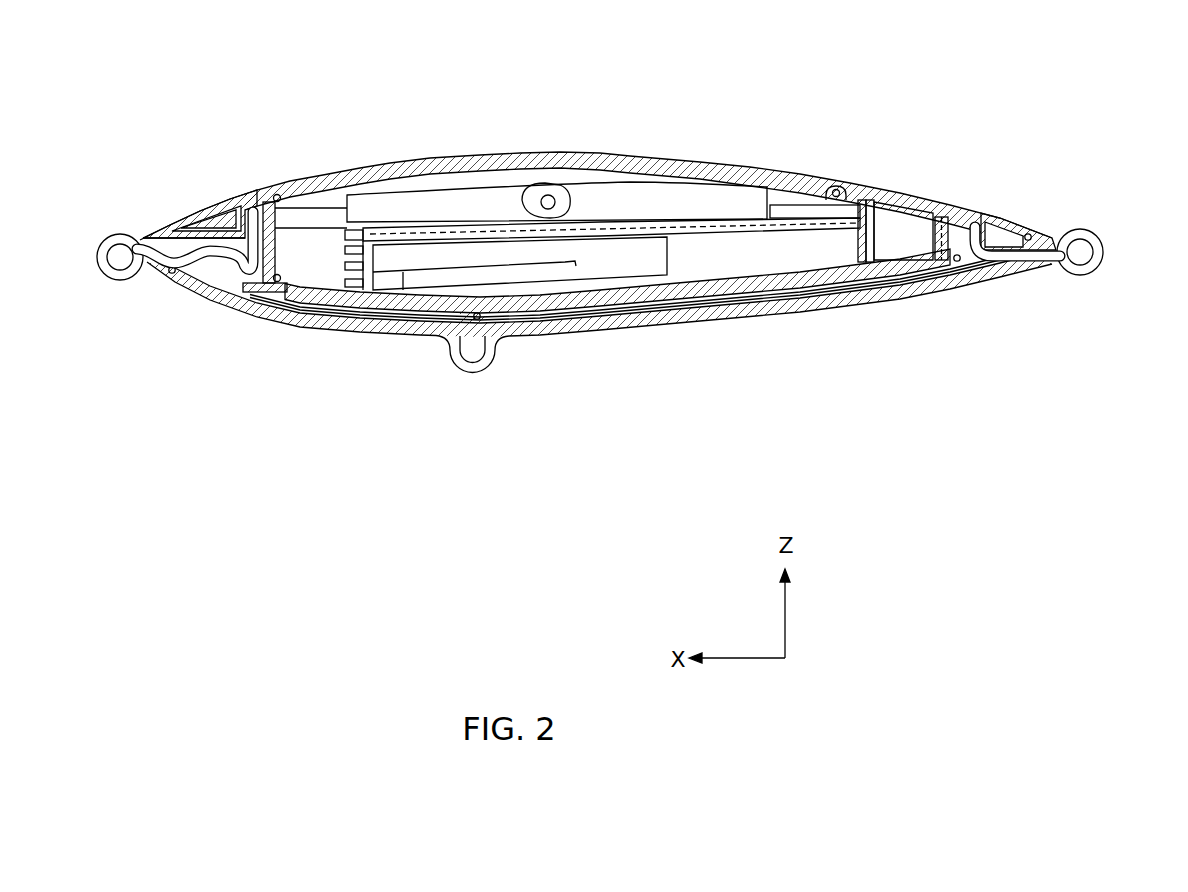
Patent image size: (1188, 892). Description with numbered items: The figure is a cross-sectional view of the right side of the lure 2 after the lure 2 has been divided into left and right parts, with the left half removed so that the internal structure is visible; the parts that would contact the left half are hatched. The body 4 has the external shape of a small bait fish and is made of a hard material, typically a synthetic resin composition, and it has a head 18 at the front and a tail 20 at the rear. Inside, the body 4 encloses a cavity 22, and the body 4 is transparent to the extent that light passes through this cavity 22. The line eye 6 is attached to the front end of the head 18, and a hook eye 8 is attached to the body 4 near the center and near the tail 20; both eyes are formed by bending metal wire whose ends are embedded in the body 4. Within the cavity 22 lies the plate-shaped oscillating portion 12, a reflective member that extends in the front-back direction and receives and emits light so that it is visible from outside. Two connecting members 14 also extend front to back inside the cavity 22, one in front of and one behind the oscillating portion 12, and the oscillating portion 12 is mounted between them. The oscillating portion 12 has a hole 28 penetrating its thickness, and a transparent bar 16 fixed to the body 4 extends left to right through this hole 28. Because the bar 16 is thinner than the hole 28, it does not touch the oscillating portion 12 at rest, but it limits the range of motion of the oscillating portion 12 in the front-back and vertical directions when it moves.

The lure 2 is at (603, 219).
The body 4 is at (399, 163).
The line eye 6 is at (121, 234).
The hook eye 8 is at (456, 373).
The oscillating portion 12 is at (658, 200).
The connecting member 14 is at (283, 195).
The bar 16 is at (556, 192).
The head 18 is at (201, 200).
The tail 20 is at (1042, 224).
The cavity 22 is at (313, 262).
The hole 28 is at (527, 197).